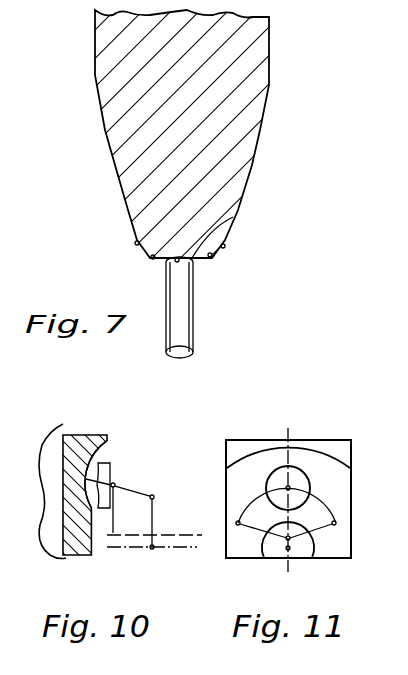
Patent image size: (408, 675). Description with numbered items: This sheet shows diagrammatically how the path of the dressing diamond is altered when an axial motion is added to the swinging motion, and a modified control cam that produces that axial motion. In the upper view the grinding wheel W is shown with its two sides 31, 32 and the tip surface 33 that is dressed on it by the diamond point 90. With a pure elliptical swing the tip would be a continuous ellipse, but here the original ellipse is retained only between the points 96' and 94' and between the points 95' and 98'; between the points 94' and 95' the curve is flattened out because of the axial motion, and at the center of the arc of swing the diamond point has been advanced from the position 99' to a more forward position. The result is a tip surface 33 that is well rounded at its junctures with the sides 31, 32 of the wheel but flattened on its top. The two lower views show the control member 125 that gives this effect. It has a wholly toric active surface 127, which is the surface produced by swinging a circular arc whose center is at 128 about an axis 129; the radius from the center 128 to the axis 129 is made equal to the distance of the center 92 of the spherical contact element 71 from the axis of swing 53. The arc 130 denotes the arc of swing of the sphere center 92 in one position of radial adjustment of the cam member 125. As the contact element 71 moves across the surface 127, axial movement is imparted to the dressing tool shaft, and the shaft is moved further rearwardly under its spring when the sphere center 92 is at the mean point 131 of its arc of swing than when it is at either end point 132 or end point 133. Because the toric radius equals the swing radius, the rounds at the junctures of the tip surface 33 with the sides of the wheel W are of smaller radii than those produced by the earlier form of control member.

In FIG. 7, the grinding wheel W is at (107, 43).
In FIG. 7, the side of the wheel 31 is at (253, 160).
In FIG. 7, the side of the wheel 32 is at (115, 170).
In FIG. 7, the tip surface 33 is at (195, 262).
In FIG. 7, the diamond point 90 is at (175, 262).
In FIG. 7, the point 94' is at (131, 267).
In FIG. 7, the point 95' is at (230, 267).
In FIG. 7, the point 96' is at (113, 245).
In FIG. 7, the point 98' is at (246, 247).
In FIG. 7, the diamond point position 99' is at (212, 307).
In FIG. 10, the spherical contact element 71 is at (97, 496).
In FIG. 11, the spherical contact element 71 is at (276, 478).
In FIG. 10, the center of the spherical element 92 is at (115, 484).
In FIG. 10, the control member 125 is at (73, 545).
In FIG. 10, the toric active surface 127 is at (100, 442).
In FIG. 11, the toric active surface 127 is at (338, 483).
In FIG. 10, the center of the circular arc 128 is at (154, 496).
In FIG. 10, the axis 129 is at (180, 549).
In FIG. 11, the axis 129 is at (286, 550).
In FIG. 11, the arc of swing of the sphere center 130 is at (327, 503).
In FIG. 11, the mean point 131 is at (290, 487).
In FIG. 11, the end point 132 is at (236, 521).
In FIG. 11, the end point 133 is at (336, 523).
In FIG. 10, the axis of swing 53 is at (174, 535).
In FIG. 11, the axis of swing 53 is at (291, 541).